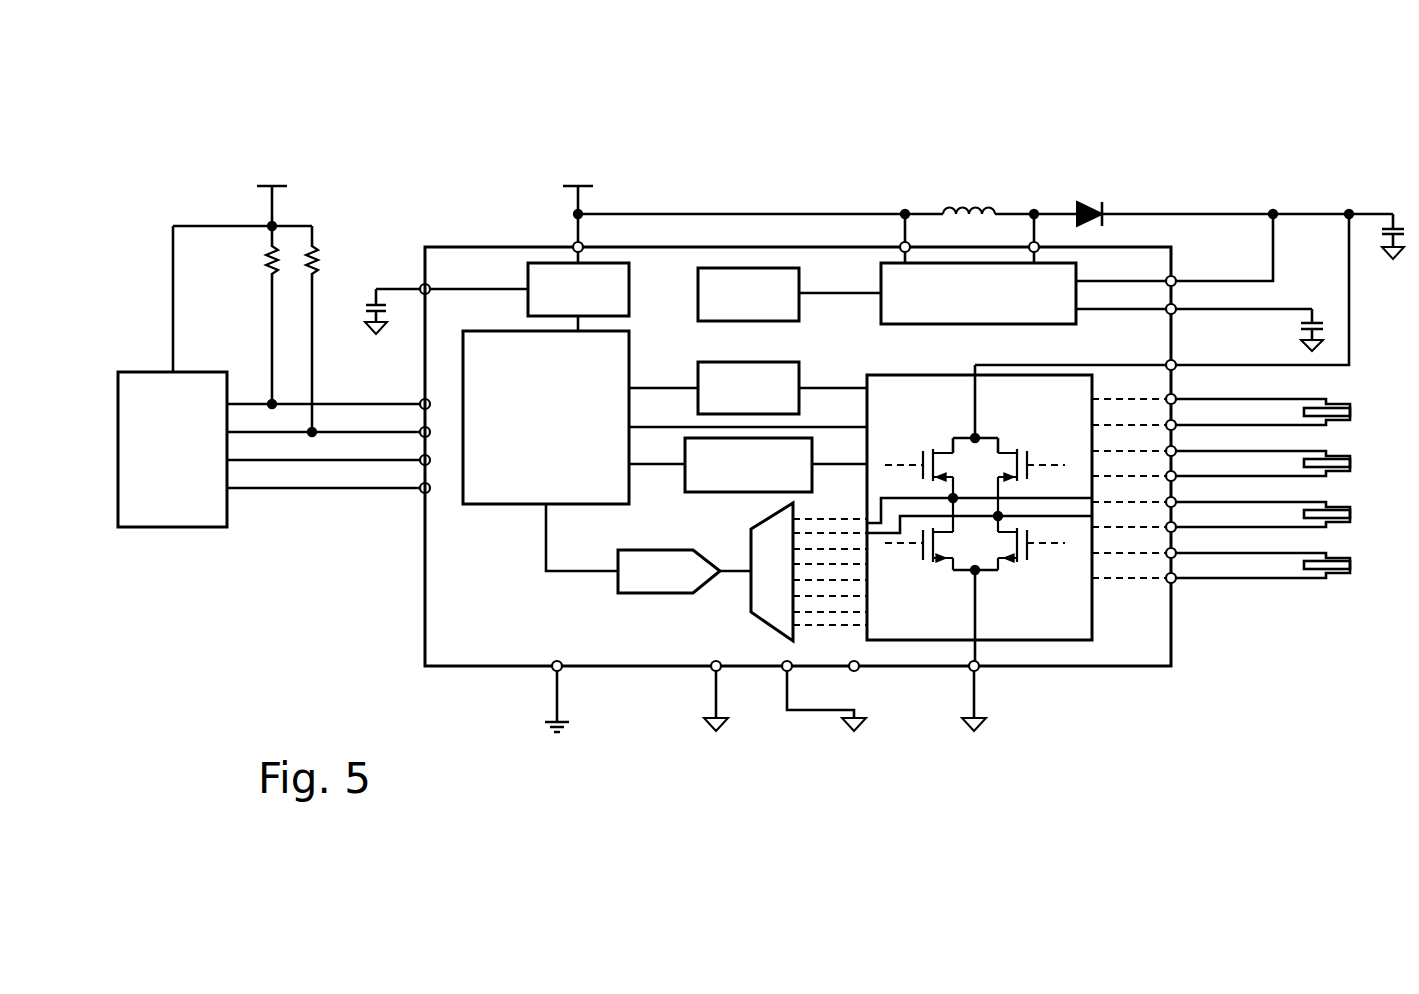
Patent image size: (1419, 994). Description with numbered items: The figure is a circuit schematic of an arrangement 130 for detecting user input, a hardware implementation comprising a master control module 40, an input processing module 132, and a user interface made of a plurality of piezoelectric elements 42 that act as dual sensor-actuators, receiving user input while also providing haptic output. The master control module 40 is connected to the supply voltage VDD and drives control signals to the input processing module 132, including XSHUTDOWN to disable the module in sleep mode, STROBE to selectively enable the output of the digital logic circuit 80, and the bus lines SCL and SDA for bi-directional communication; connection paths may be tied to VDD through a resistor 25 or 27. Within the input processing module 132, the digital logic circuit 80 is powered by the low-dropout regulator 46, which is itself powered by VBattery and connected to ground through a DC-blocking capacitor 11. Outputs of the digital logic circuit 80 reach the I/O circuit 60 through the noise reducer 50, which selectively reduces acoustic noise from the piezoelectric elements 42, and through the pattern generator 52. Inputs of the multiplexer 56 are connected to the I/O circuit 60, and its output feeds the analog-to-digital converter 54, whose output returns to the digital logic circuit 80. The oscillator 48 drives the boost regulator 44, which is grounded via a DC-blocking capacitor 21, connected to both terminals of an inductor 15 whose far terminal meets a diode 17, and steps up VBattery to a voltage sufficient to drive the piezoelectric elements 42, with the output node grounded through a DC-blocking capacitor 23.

The arrangement 130 is at (214, 170).
The input processing module 132 is at (500, 247).
The resistor 25 is at (267, 260).
The resistor 27 is at (320, 263).
The DC-blocking capacitor 11 is at (368, 306).
The master control module 40 is at (172, 449).
The low-dropout regulator (LDO) 46 is at (630, 306).
The oscillator 48 is at (800, 303).
The boost regulator 44 is at (975, 326).
The noise reducer (NR) 50 is at (800, 366).
The digital logic circuit 80 is at (546, 417).
The pattern generator 52 is at (737, 494).
The analog-to-digital converter (ADC) 54 is at (653, 597).
The multiplexer (MUX) 56 is at (750, 604).
The I/O circuit 60 is at (979, 515).
The inductor 15 is at (952, 211).
The diode 17 is at (1080, 210).
The DC-blocking capacitor 21 is at (1305, 326).
The DC-blocking capacitor 23 is at (1385, 232).
The piezoelectric element 42 is at (1352, 412).